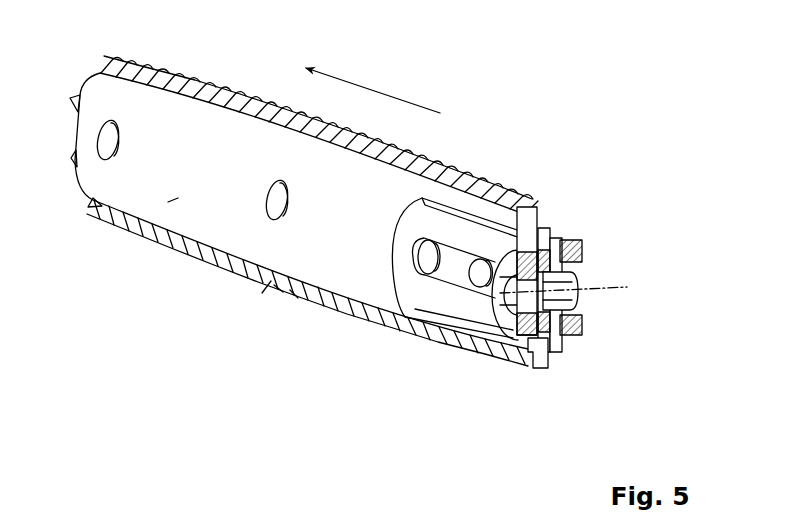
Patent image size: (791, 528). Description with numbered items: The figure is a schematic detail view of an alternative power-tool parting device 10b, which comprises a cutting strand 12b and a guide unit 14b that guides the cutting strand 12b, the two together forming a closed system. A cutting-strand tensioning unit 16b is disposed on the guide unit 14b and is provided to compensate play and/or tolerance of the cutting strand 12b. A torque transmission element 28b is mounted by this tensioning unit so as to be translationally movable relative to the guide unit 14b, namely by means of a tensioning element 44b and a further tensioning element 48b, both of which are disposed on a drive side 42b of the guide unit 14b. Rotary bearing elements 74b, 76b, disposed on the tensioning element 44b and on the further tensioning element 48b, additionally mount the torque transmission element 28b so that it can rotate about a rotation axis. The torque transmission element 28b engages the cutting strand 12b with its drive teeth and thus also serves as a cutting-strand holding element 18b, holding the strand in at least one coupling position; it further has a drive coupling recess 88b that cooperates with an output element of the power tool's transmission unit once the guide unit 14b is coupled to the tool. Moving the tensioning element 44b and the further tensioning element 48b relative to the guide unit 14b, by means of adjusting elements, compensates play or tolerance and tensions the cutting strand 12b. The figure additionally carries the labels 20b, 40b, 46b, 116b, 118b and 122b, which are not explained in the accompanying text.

The power-tool parting device 10b is at (385, 257).
The cutting strand 12b is at (333, 312).
The guide unit 14b is at (213, 222).
The cutting-strand tensioning unit 16b is at (333, 266).
The cutting-strand holding element 18b is at (600, 290).
The guide rail element 20b is at (428, 262).
The torque transmission element 28b is at (580, 266).
The cutting direction 40b is at (377, 88).
The drive side 42b is at (597, 271).
The tensioning element 44b is at (443, 298).
The cutting plane 46b is at (171, 203).
The further tensioning element 48b is at (552, 356).
The rotary bearing element 74b is at (525, 250).
The rotary bearing element 76b is at (568, 251).
The drive coupling recess 88b is at (565, 298).
The cutter element 116b is at (267, 290).
The connecting link 118b is at (274, 285).
The drive link 122b is at (290, 291).